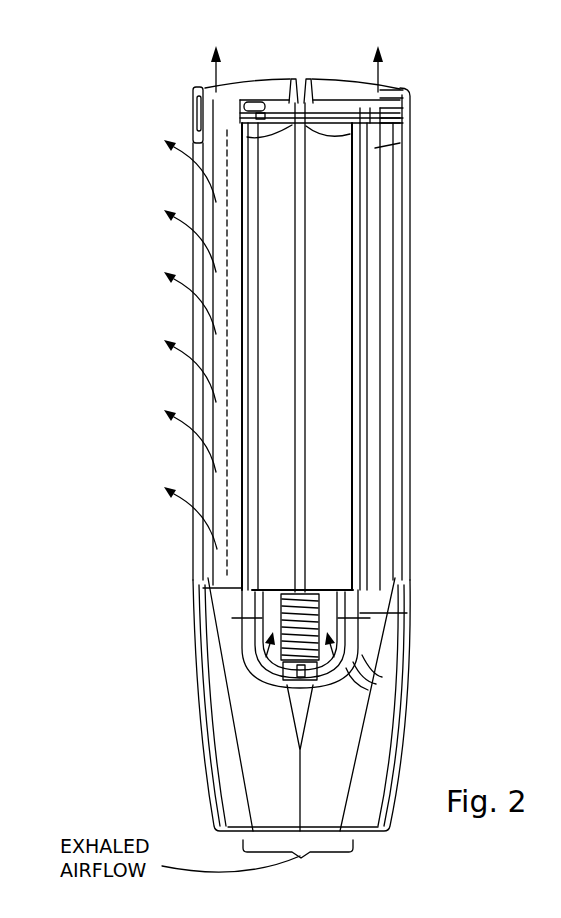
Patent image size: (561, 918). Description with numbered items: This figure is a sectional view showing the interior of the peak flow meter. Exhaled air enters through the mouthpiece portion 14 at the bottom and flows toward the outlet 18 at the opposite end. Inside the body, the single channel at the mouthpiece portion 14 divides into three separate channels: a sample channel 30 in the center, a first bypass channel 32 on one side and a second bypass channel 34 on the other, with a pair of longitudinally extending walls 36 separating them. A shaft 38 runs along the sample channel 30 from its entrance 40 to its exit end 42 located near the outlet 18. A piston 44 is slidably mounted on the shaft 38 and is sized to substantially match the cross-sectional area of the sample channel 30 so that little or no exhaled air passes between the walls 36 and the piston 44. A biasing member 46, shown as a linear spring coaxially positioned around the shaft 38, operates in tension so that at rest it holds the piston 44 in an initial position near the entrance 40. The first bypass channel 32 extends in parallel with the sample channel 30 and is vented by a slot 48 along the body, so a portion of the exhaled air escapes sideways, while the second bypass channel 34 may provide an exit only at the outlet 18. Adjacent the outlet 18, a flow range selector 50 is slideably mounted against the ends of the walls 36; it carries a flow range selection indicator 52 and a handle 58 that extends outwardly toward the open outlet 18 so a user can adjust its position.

The mouthpiece portion 14 is at (337, 748).
The outlet 18 is at (390, 88).
The sample channel 30 is at (333, 325).
The first bypass channel 32 is at (222, 213).
The second bypass channel 34 is at (387, 384).
The walls 36 is at (242, 428).
The shaft 38 is at (305, 535).
The entrance 40 is at (282, 680).
The exit end 42 is at (380, 130).
The piston 44 is at (338, 590).
The biasing member 46 is at (205, 622).
The slot 48 is at (198, 557).
The flow range selector 50 is at (250, 128).
The flow range selection indicator 52 is at (258, 100).
The handle 58 is at (291, 80).